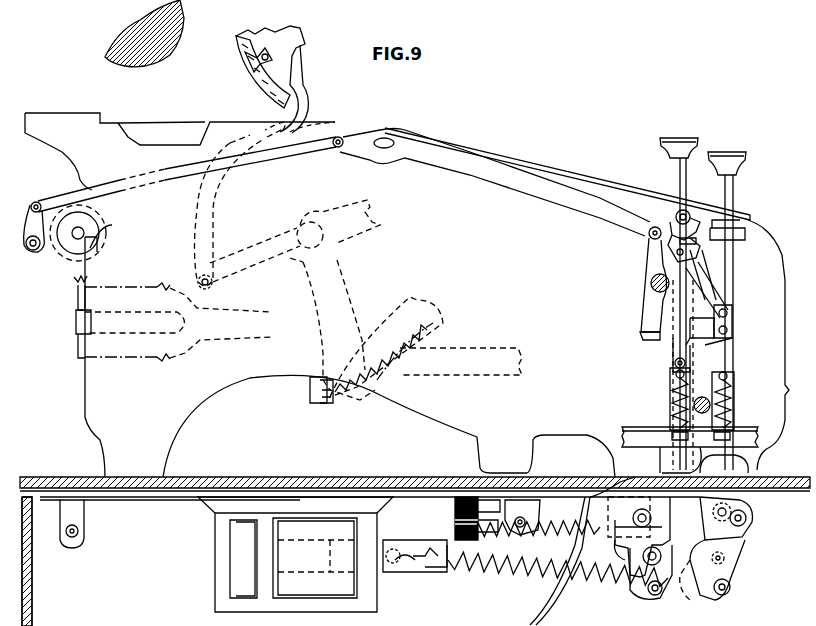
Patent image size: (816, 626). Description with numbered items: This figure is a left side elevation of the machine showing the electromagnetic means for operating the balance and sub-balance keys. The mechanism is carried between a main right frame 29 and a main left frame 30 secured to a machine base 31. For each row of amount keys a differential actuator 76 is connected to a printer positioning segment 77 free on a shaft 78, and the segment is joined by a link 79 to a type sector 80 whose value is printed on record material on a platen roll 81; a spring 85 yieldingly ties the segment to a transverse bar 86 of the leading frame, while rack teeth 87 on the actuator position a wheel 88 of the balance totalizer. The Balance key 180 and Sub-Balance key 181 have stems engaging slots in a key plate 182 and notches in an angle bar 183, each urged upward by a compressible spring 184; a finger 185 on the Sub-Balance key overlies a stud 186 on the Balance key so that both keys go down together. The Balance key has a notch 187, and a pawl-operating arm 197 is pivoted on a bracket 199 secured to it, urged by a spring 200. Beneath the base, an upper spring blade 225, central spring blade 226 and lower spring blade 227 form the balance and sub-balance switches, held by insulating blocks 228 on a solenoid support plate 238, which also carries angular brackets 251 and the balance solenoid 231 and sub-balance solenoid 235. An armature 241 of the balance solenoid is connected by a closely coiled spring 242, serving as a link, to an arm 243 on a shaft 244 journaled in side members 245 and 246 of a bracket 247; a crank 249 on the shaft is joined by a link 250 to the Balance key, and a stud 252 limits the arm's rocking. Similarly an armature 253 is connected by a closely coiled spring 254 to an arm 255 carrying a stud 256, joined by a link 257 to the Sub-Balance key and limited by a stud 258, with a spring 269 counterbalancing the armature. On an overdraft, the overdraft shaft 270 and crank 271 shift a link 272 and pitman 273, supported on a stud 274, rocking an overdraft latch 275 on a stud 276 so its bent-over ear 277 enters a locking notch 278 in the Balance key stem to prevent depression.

The main right frame 29 is at (168, 132).
The main left frame 30 is at (92, 118).
The machine base 31 is at (272, 476).
The differential actuator 76 is at (512, 348).
The printer positioning segment 77 is at (336, 262).
The shaft 78 is at (322, 232).
The link 79 is at (218, 200).
The type sector 80 is at (288, 72).
The platen roll 81 is at (156, 60).
The spring 85 is at (420, 305).
The transverse bar 86 is at (310, 388).
The rack teeth 87 is at (162, 286).
The wheel 88 is at (74, 283).
The Balance key 180 is at (680, 188).
The Sub-Balance key 181 is at (733, 185).
The key plate 182 is at (598, 178).
The angle bar 183 is at (648, 426).
The compressible spring 184 is at (676, 404).
The finger 185 is at (712, 338).
The stud 186 is at (674, 364).
The notch 187 is at (675, 222).
The pawl-operating arm 197 is at (690, 228).
The bracket 199 is at (692, 255).
The spring 200 is at (735, 238).
The upper spring blade 225 is at (494, 516).
The central spring blade 226 is at (455, 522).
The lower spring blade 227 is at (528, 518).
The insulating blocks 228 is at (455, 505).
The balance solenoid 231 is at (217, 540).
The sub-balance solenoid 235 is at (277, 600).
The solenoid support plate 238 is at (112, 497).
The armature 241 is at (392, 572).
The closely coiled spring 242 is at (612, 580).
The arm 243 is at (655, 596).
The shaft 244 is at (640, 512).
The side member 245 is at (632, 552).
The side member 246 is at (740, 525).
The bracket 247 is at (612, 485).
The crank 249 is at (672, 473).
The link 250 is at (672, 433).
The angular brackets 251 is at (84, 522).
The stud 252 is at (640, 560).
The armature 253 is at (440, 572).
The closely coiled spring 254 is at (696, 598).
The arm 255 is at (732, 580).
The stud 256 is at (728, 542).
The link 257 is at (742, 470).
The stud 258 is at (726, 562).
The spring 269 is at (575, 538).
The overdraft shaft 270 is at (36, 252).
The crank 271 is at (48, 215).
The link 272 is at (72, 198).
The pitman 273 is at (430, 160).
The stud 274 is at (372, 135).
The overdraft latch 275 is at (650, 262).
The stud 276 is at (652, 286).
The bent-over ear 277 is at (658, 337).
The locking notch 278 is at (712, 297).